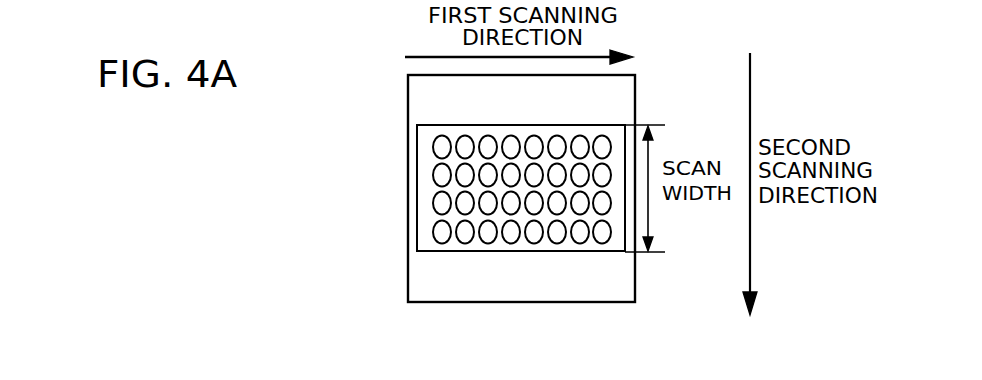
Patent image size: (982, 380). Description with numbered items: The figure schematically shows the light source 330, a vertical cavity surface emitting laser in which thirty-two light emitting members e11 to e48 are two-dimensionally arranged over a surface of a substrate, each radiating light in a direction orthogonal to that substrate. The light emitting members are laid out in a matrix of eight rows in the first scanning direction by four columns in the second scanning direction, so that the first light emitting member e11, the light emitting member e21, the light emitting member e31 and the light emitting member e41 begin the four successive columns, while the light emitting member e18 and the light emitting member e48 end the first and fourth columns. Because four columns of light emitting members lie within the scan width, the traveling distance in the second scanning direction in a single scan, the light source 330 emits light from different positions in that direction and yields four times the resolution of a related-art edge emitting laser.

The light source 330 is at (411, 105).
The light emitting member e11 is at (440, 147).
The light emitting member e21 is at (440, 176).
The light emitting member e31 is at (440, 204).
The light emitting member e41 is at (440, 233).
The light emitting member e18 is at (602, 142).
The light emitting member e48 is at (603, 236).